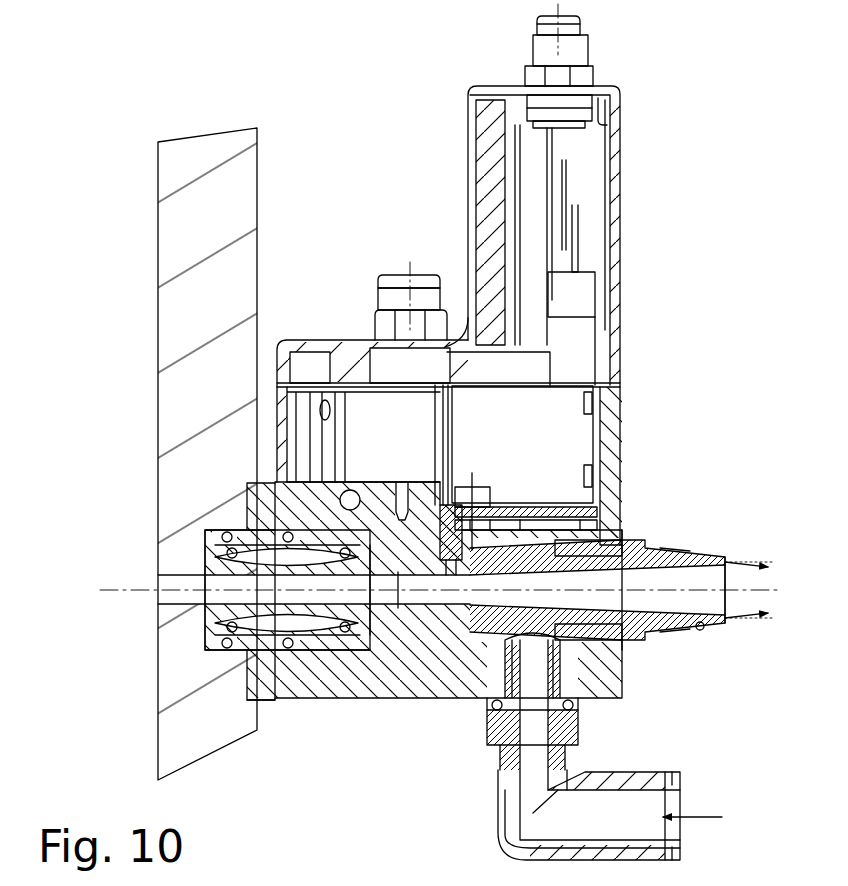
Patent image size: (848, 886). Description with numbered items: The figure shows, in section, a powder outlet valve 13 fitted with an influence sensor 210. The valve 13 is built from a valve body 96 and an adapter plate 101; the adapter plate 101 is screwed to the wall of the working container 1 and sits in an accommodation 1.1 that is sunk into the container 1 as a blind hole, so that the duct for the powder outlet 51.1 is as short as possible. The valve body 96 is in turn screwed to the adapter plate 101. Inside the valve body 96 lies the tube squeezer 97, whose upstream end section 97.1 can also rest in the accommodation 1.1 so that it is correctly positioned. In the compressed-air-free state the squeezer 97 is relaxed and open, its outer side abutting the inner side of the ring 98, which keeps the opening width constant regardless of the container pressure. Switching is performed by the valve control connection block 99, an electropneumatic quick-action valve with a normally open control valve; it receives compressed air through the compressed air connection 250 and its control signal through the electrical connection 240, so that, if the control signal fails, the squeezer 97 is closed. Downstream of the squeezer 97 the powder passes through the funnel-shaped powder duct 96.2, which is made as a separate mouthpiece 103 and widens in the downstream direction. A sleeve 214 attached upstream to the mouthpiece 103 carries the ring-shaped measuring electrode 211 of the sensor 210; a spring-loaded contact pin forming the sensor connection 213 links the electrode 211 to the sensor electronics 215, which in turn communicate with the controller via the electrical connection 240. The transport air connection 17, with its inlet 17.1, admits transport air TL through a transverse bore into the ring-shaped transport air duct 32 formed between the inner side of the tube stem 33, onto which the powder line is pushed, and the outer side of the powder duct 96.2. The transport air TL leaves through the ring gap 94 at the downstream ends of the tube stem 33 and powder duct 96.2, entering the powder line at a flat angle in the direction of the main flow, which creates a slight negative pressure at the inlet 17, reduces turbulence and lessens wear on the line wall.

The working container 1 is at (168, 336).
The accommodation 1.1 is at (232, 523).
The powder outlet 51.1 is at (200, 580).
The upstream end section of the squeezer 97.1 is at (203, 633).
The ring 98 is at (322, 648).
The tube squeezer 97 is at (350, 647).
The valve body 96 is at (300, 702).
The adapter plate 101 is at (263, 702).
The powder outlet valve 13 is at (333, 753).
The sensor connection 213 is at (417, 520).
The sleeve 214 is at (436, 625).
The measuring electrode 211 is at (447, 625).
The influence sensor 210 is at (502, 493).
The sensor electronics 215 is at (563, 505).
The valve control connection block 99 is at (623, 293).
The compressed air connection 250 is at (377, 298).
The electrical connection 240 is at (590, 50).
The transport air duct 32 is at (653, 552).
The tube stem 33 is at (670, 550).
The ring gap 94 is at (725, 623).
The powder duct 96.2 is at (658, 632).
The mouthpiece 103 is at (706, 628).
The transport air connection 17 is at (488, 748).
The inlet 17.1 is at (688, 826).
The transport air TL is at (693, 802).